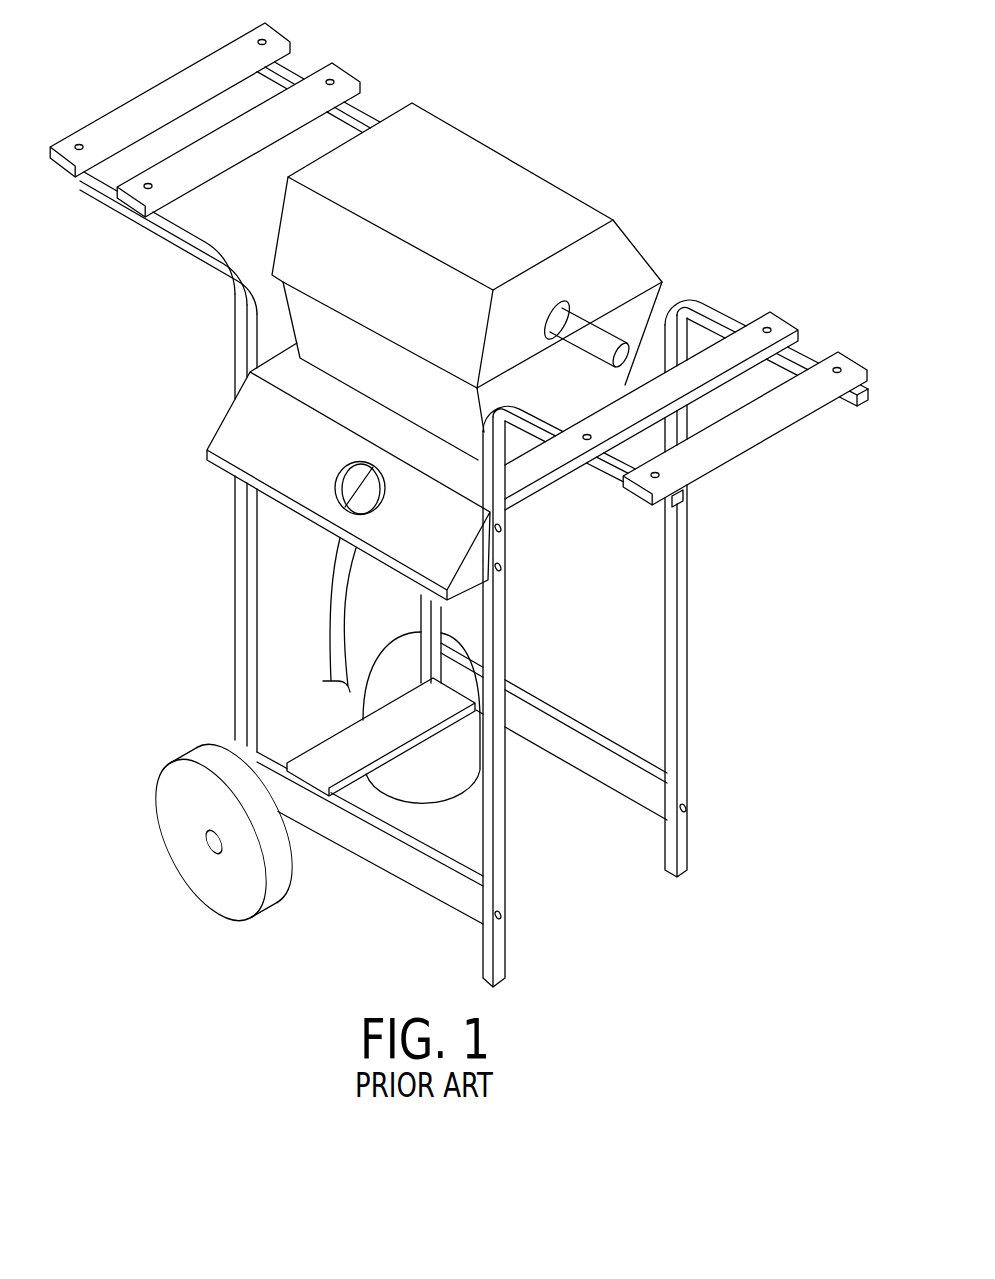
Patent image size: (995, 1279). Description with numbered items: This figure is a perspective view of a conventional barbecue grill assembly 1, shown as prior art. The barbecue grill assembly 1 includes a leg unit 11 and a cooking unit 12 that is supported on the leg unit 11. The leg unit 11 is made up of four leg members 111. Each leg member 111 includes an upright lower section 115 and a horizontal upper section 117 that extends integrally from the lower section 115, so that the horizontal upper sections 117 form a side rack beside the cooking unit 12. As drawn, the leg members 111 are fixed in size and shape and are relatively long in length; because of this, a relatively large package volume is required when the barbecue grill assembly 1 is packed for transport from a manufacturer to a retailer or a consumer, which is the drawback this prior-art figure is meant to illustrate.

The barbecue grill assembly 1 is at (678, 209).
The leg unit 11 is at (645, 909).
The leg members 111 is at (688, 687).
The upright lower section 115 is at (497, 800).
The horizontal upper section 117 is at (612, 474).
The cooking unit 12 is at (507, 157).